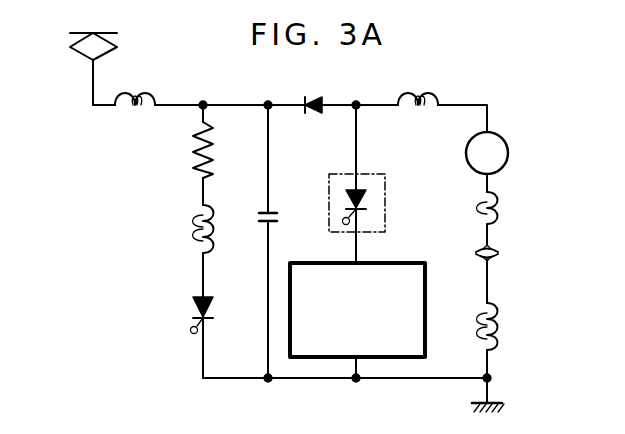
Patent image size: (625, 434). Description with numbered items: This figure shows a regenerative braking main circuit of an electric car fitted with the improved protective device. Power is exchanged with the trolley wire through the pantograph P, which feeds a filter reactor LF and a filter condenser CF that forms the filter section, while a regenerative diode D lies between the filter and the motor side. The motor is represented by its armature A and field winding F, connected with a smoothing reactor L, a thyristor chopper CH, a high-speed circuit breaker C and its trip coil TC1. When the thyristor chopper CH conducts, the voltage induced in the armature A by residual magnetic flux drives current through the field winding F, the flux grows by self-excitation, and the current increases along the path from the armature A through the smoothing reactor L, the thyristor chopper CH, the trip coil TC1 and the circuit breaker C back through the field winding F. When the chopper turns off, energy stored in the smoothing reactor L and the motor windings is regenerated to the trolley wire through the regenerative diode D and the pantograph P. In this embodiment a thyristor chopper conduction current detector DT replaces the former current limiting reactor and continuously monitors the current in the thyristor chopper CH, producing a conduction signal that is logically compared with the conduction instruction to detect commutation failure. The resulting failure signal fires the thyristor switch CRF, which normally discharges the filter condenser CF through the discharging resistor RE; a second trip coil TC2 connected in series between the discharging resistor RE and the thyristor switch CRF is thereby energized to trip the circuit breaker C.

The pantograph P is at (64, 60).
The filter reactor LF is at (133, 90).
The discharging resistor RE is at (190, 157).
The second trip coil TC2 is at (203, 229).
The thyristor switch CRF is at (192, 323).
The filter condenser CF is at (282, 218).
The regenerative diode D is at (306, 86).
The thyristor chopper CH is at (387, 193).
The smoothing reactor L is at (417, 90).
The armature A is at (512, 157).
The field winding F is at (506, 211).
The high-speed circuit breaker C is at (508, 254).
The trip coil TC1 is at (510, 330).
The thyristor chopper conduction current detector DT is at (428, 317).